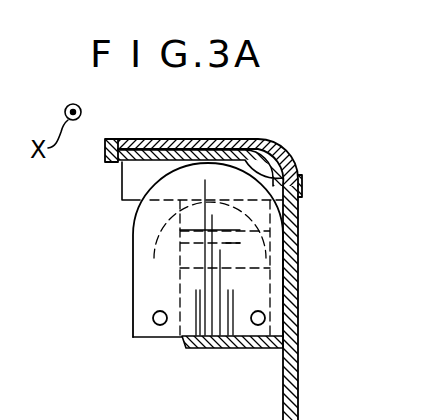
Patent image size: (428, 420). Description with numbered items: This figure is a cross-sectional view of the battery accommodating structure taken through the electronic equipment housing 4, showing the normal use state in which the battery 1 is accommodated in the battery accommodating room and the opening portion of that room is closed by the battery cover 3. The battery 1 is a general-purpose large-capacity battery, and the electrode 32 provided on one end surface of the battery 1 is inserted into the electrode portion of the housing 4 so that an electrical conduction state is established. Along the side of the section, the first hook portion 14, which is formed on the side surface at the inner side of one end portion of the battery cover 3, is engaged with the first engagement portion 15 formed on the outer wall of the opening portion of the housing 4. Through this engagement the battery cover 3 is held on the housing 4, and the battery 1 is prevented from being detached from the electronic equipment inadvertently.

The battery 1 is at (133, 236).
The battery cover 3 is at (258, 142).
The electronic equipment housing 4 is at (110, 137).
The first hook portion 14 is at (300, 178).
The first engagement portion 15 is at (298, 212).
The electrode 32 is at (153, 318).